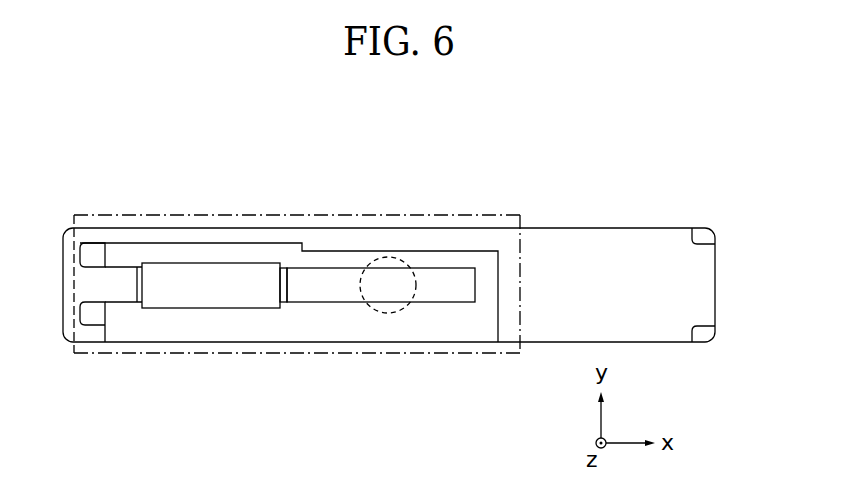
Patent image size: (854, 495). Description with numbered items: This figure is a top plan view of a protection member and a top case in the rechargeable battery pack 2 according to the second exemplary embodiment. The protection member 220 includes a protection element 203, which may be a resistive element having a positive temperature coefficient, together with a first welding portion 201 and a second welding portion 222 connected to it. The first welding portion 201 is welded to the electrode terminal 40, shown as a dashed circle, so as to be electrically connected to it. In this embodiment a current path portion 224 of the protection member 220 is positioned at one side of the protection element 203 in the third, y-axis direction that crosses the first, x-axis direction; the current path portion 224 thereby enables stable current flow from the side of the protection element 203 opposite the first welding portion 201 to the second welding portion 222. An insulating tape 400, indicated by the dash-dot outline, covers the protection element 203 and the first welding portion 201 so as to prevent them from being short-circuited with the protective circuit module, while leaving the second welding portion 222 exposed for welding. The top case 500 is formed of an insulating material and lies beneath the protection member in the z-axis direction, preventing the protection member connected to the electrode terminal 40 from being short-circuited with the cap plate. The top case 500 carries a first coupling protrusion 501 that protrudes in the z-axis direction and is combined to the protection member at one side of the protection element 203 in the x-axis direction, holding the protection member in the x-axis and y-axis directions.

The rechargeable battery pack 2 is at (289, 130).
The electrode terminal 40 is at (388, 257).
The first welding portion 201 is at (448, 279).
The protection element 203 is at (199, 272).
The protection member 220 is at (542, 225).
The second welding portion 222 is at (626, 243).
The current path portion 224 is at (265, 236).
The insulating tape 400 is at (323, 215).
The top case 500 is at (321, 322).
The first coupling protrusion 501 is at (93, 253).